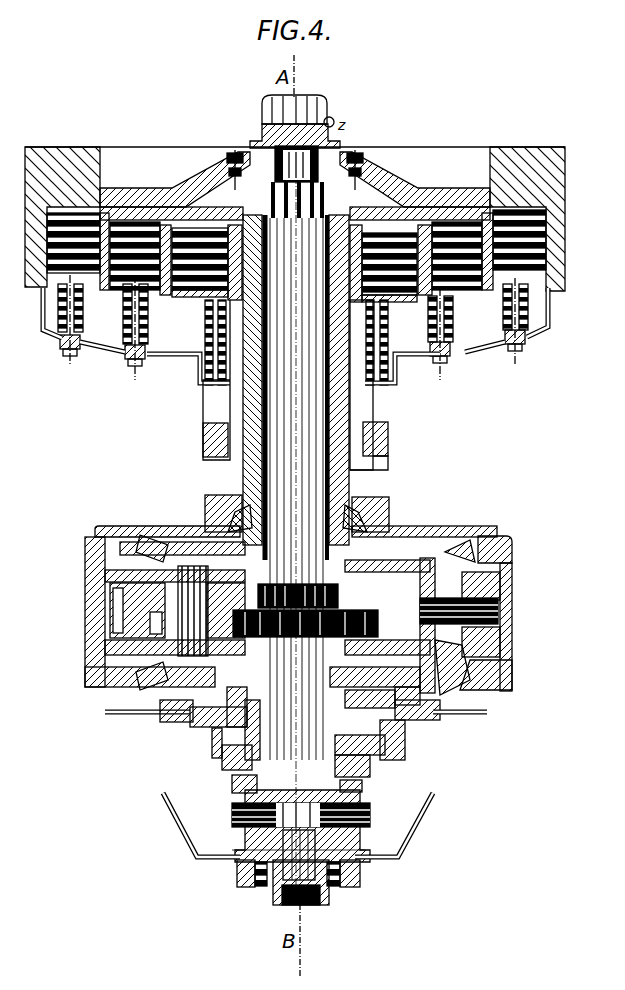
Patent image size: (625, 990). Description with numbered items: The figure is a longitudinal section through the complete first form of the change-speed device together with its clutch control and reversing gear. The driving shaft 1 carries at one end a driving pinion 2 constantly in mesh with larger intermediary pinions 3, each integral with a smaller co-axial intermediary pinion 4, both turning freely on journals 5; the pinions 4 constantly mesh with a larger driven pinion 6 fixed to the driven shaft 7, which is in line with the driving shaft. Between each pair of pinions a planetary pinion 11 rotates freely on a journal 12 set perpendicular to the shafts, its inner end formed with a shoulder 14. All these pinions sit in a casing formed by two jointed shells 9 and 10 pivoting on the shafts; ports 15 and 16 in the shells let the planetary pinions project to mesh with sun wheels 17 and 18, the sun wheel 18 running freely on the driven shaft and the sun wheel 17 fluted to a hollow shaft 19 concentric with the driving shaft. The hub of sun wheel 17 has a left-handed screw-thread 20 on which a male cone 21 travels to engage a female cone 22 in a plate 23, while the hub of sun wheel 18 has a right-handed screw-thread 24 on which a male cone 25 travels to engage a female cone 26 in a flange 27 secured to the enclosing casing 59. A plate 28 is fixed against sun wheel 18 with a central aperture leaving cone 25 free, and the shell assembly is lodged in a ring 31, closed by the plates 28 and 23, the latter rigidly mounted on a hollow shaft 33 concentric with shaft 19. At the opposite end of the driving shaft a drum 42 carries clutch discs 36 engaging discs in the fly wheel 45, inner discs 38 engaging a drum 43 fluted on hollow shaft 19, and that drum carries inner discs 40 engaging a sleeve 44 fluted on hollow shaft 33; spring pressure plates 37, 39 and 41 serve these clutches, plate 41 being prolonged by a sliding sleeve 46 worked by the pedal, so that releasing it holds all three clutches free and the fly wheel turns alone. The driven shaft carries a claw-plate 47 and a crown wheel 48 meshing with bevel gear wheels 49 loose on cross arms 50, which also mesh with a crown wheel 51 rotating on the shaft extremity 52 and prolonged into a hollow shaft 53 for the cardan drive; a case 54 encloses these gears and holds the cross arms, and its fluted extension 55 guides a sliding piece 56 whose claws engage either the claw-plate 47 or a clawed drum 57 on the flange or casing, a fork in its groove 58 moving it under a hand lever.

The driving shaft 1 is at (215, 178).
The driving pinion 2 is at (340, 594).
The intermediary pinion 3 is at (130, 600).
The intermediary pinion 4 is at (162, 624).
The journal 5 is at (163, 645).
The driven pinion 6 is at (355, 620).
The driven shaft 7 is at (225, 756).
The shell 9 is at (495, 585).
The shell 10 is at (500, 640).
The planetary pinion 11 is at (455, 670).
The journal 12 is at (490, 612).
The shoulder 14 is at (402, 530).
The port 15 is at (500, 690).
The port 16 is at (465, 545).
The sun wheel 17 is at (135, 528).
The sun wheel 18 is at (428, 705).
The hollow shaft 19 is at (350, 470).
The screw-thread 20 is at (238, 517).
The male cone 21 is at (205, 523).
The female cone 22 is at (205, 502).
The plate 23 is at (430, 527).
The screw-thread 24 is at (237, 722).
The male cone 25 is at (210, 720).
The female cone 26 is at (210, 707).
The flange 27 is at (405, 720).
The plate 28 is at (440, 690).
The ring 31 is at (508, 558).
The hollow shaft 33 is at (357, 479).
The clutch discs 36 is at (545, 300).
The spring pressure plate 37 is at (517, 344).
The clutch discs 38 is at (450, 322).
The spring pressure plate 39 is at (438, 355).
The clutch discs 40 is at (398, 325).
The spring pressure plate 41 is at (392, 372).
The drum 42 is at (484, 225).
The drum 43 is at (430, 250).
The sleeve 44 is at (372, 228).
The fly wheel 45 is at (518, 170).
The sliding sleeve 46 is at (373, 413).
The claw-plate 47 is at (365, 768).
The crown wheel 48 is at (345, 806).
The bevel gear wheel 49 is at (370, 860).
The cross arms 50 is at (237, 862).
The crown wheel 51 is at (355, 878).
The extremity 52 is at (335, 875).
The hollow shaft 53 is at (325, 892).
The case 54 is at (375, 840).
The extension 55 is at (230, 812).
The sliding piece 56 is at (360, 778).
The drum 57 is at (390, 740).
The groove 58 is at (243, 770).
The casing 59 is at (415, 720).